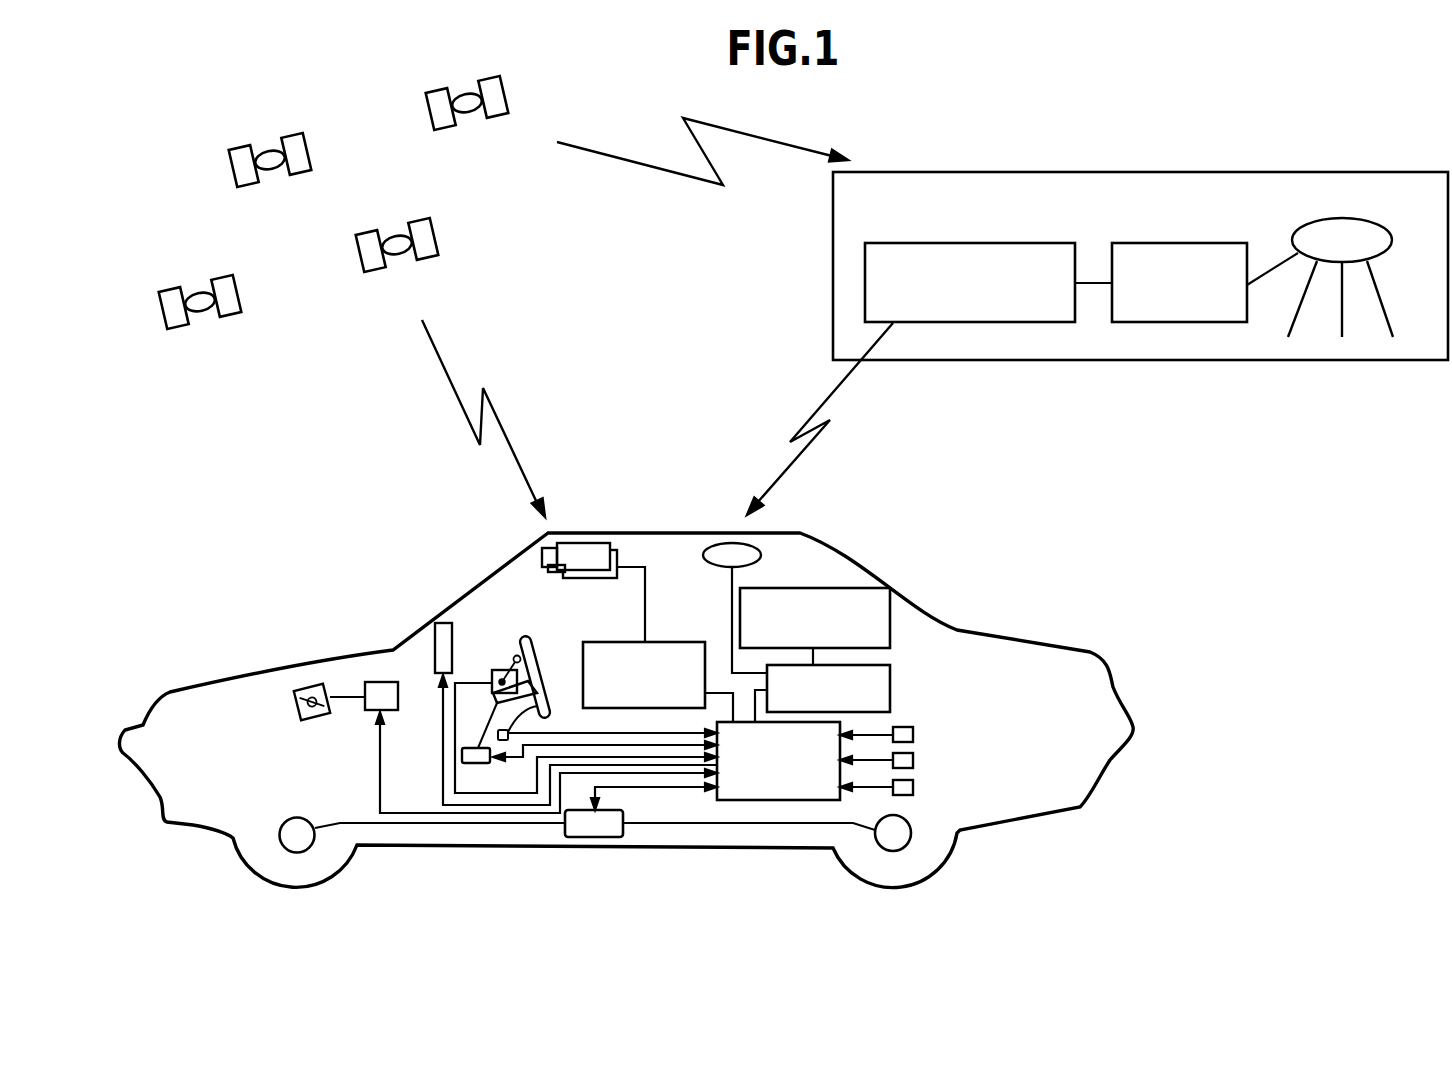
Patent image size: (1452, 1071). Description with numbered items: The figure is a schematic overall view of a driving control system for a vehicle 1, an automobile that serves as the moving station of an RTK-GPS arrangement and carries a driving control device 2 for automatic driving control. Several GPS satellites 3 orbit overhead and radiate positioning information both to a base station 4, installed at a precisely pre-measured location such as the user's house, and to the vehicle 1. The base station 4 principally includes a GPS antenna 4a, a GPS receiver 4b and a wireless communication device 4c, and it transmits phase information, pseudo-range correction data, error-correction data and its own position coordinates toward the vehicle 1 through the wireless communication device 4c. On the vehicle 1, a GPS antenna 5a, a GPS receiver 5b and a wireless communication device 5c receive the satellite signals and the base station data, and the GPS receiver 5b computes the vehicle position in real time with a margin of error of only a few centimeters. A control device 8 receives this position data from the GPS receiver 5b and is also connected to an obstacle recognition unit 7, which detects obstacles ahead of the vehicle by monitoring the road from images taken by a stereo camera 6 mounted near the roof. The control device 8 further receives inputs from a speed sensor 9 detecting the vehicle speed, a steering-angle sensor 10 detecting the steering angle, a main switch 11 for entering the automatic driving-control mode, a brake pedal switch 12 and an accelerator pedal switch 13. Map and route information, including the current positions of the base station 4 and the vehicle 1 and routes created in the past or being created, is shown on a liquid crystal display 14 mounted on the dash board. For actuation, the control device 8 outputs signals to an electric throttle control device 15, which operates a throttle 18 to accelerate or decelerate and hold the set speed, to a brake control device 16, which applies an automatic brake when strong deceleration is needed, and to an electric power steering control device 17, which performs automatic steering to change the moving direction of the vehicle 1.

The vehicle 1 is at (1090, 648).
The driving control device 2 is at (1005, 660).
The GPS satellites 3 is at (510, 93).
The base station 4 is at (1252, 172).
The GPS antenna 4a is at (1375, 222).
The GPS receiver 4b is at (1187, 242).
The wireless communication device 4c is at (982, 242).
The GPS antenna 5a is at (727, 543).
The GPS receiver 5b is at (892, 695).
The wireless communication device 5c is at (868, 588).
The stereo camera 6 is at (578, 543).
The obstacle recognition unit 7 is at (670, 642).
The control device 8 is at (780, 800).
The speed sensor 9 is at (915, 732).
The steering-angle sensor 10 is at (547, 716).
The main switch 11 is at (502, 670).
The brake pedal switch 12 is at (915, 758).
The accelerator pedal switch 13 is at (915, 785).
The liquid crystal display 14 is at (443, 623).
The electric throttle control device 15 is at (385, 682).
The brake control device 16 is at (593, 837).
The electric power steering control device 17 is at (477, 763).
The throttle 18 is at (310, 688).